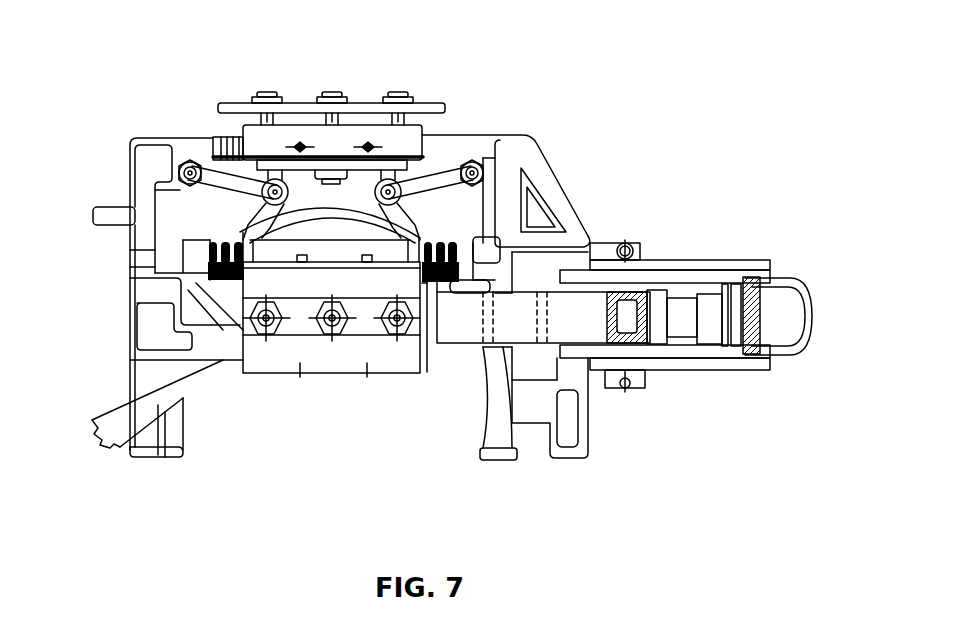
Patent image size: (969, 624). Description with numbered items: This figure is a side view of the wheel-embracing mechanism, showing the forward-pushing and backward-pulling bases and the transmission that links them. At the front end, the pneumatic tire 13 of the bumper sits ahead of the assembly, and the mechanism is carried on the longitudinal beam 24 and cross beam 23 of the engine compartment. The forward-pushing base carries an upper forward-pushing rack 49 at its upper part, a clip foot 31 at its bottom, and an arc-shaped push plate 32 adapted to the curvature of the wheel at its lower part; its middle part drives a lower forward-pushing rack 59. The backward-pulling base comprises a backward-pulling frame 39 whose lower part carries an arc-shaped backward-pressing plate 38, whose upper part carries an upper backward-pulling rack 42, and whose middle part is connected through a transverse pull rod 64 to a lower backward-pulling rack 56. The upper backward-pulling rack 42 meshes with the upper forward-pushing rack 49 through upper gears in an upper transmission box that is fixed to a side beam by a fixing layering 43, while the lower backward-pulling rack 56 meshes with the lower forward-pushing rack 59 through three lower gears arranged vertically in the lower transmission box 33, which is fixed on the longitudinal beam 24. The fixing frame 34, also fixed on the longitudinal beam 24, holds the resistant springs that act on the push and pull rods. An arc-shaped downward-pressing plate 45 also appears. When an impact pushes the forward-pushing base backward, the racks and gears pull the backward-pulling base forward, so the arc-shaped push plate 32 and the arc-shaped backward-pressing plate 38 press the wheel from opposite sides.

The pneumatic tire 13 is at (788, 280).
The cross beam 23 is at (637, 290).
The longitudinal beam 24 is at (577, 307).
The clip foot 31 is at (553, 450).
The arc-shaped push plate 32 is at (492, 440).
The lower transmission box 33 is at (348, 358).
The fixing frame 34 is at (322, 250).
The arc-shaped backward-pressing plate 38 is at (162, 415).
The backward-pulling frame 39 is at (152, 152).
The upper backward-pulling rack 42 is at (220, 148).
The fixing layering 43 is at (418, 140).
The arc-shaped downward-pressing plate 45 is at (362, 160).
The upper forward-pushing rack 49 is at (472, 152).
The lower backward-pulling rack 56 is at (220, 345).
The lower forward-pushing rack 59 is at (430, 287).
The transverse pull rod 64 is at (143, 270).